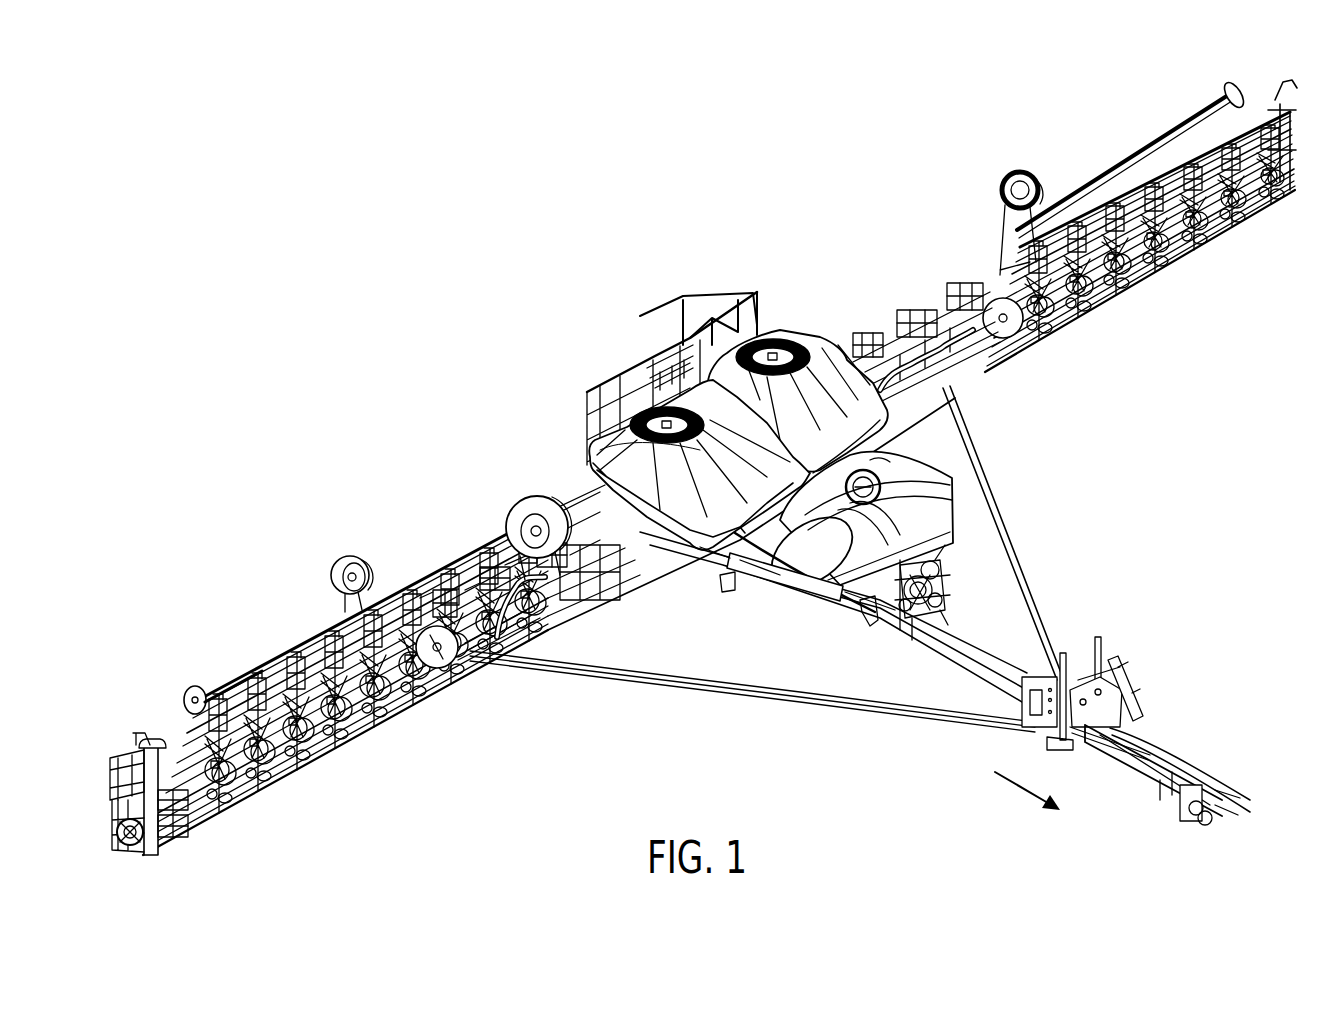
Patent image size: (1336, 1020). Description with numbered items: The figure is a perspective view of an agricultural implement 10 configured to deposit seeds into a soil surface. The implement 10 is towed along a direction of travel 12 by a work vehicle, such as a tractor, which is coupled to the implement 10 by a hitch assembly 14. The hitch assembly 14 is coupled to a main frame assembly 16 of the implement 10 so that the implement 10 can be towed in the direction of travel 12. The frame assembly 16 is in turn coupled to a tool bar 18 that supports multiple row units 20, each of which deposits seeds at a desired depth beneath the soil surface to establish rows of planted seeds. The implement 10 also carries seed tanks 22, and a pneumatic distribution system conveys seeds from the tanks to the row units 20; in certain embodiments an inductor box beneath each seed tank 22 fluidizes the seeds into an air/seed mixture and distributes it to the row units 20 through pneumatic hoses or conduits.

The agricultural implement 10 is at (460, 421).
The direction of travel 12 is at (1023, 790).
The hitch assembly 14 is at (1215, 795).
The main frame assembly 16 is at (970, 641).
The tool bar 18 is at (252, 788).
The row units 20 is at (945, 292).
The seed tanks 22 is at (857, 410).